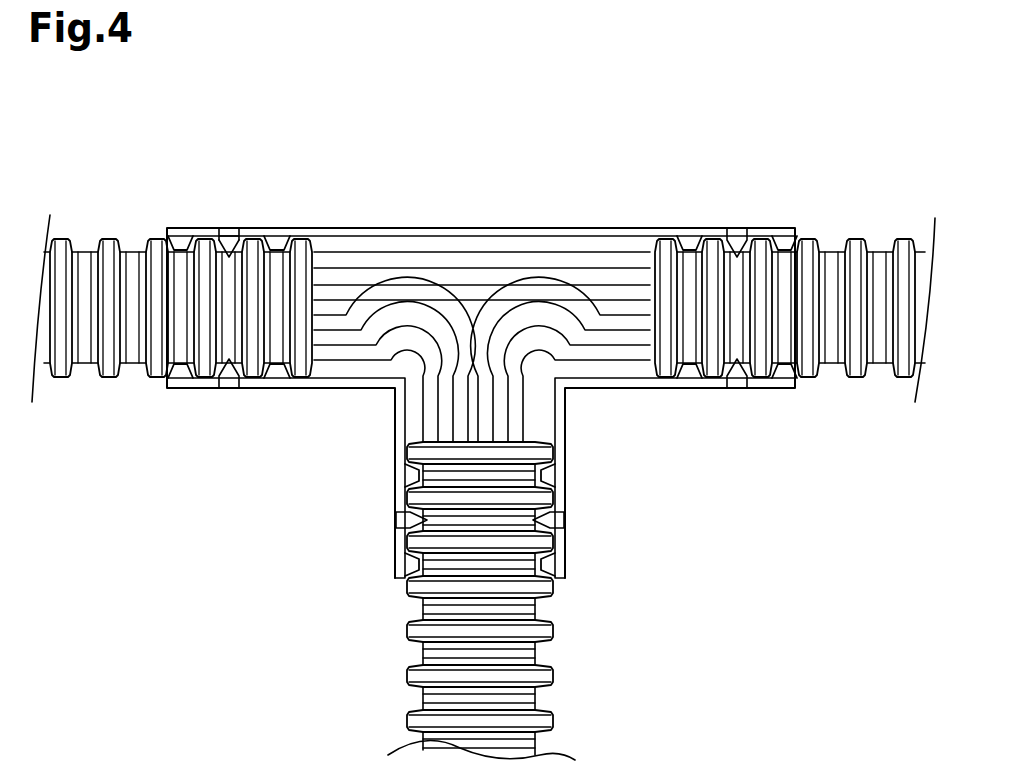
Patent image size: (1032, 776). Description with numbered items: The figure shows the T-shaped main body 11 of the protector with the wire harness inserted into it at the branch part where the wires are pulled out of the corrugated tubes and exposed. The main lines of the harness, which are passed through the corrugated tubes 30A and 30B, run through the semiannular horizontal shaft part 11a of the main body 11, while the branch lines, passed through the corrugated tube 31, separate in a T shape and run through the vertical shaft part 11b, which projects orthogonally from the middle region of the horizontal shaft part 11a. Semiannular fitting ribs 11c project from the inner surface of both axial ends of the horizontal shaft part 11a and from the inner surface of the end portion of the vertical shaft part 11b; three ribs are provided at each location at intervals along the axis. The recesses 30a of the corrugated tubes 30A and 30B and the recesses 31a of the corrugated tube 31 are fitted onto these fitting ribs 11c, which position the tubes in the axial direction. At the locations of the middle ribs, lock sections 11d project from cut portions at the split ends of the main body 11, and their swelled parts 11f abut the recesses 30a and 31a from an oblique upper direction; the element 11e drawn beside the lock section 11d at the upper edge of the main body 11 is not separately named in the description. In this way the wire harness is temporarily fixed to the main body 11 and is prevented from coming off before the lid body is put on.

The main body 11 is at (343, 227).
The horizontal shaft part 11a is at (560, 228).
The vertical shaft part 11b is at (565, 497).
The fitting ribs 11c is at (172, 236).
The lock sections 11d is at (222, 228).
The lock tab 11e is at (242, 228).
The swelled parts 11f is at (200, 236).
The corrugated tube 30A is at (153, 238).
The corrugated tube 30B is at (812, 242).
The recesses 30a is at (227, 328).
The corrugated tube 31 is at (550, 455).
The recesses 31a is at (483, 522).